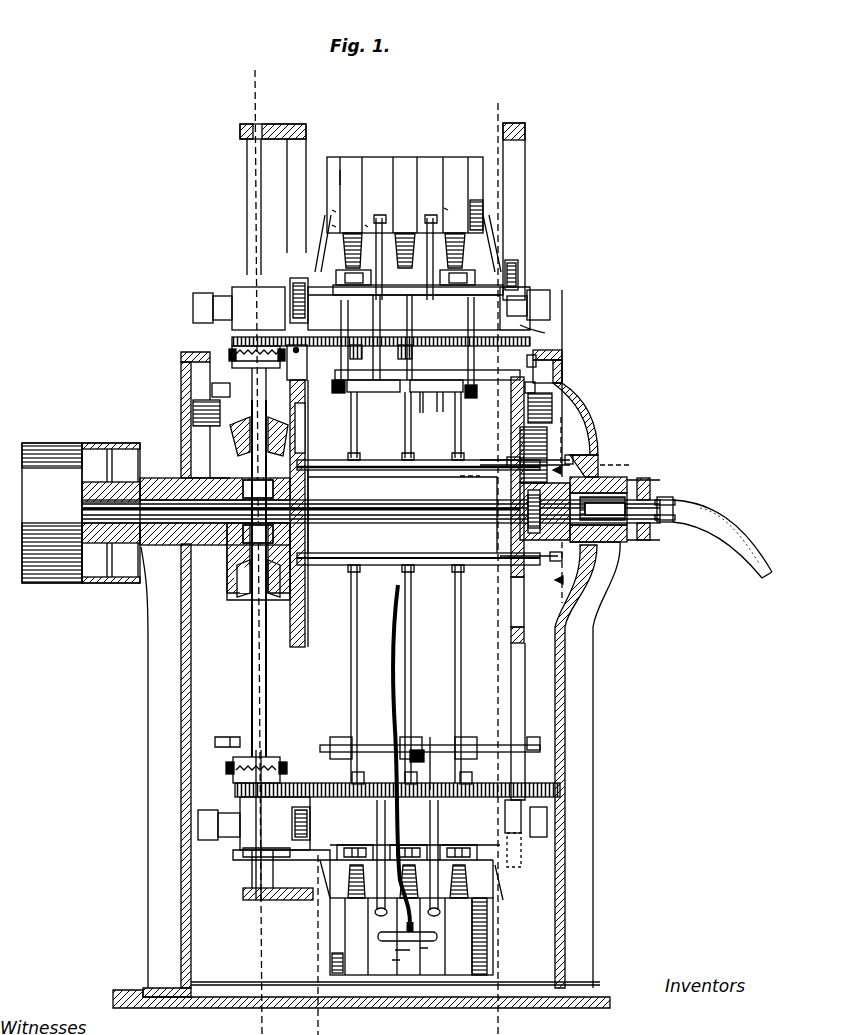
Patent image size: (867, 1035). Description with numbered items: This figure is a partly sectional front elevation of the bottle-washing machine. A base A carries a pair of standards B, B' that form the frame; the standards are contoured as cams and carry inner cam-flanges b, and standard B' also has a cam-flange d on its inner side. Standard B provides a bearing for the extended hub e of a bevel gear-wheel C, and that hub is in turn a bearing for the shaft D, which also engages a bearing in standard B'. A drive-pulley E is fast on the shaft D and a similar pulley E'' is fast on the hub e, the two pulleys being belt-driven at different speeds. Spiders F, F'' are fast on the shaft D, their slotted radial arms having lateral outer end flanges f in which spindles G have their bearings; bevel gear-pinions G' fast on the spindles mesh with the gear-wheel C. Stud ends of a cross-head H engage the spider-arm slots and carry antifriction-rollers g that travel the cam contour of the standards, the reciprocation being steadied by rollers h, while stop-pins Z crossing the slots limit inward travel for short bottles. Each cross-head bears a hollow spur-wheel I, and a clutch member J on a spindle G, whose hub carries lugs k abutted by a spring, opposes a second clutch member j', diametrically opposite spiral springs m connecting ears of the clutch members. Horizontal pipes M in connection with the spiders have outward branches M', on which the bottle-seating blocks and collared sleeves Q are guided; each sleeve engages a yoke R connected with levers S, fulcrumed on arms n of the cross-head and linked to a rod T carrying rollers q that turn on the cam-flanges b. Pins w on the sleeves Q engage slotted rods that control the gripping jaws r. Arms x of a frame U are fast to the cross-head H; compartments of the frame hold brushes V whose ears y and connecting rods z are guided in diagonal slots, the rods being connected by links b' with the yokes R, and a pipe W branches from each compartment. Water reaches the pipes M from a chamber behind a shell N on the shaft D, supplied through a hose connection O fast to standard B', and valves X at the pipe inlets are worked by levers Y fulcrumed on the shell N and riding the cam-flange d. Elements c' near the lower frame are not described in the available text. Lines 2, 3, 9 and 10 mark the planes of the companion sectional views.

The base A is at (225, 990).
The standard B is at (185, 670).
The standard B' is at (583, 639).
The lateral outer end flanges f is at (240, 130).
The frame U is at (400, 157).
The brushes V is at (436, 868).
The rods z is at (432, 218).
The arms x is at (318, 240).
The jaws r is at (360, 280).
The cross-head H is at (419, 308).
The links b' is at (432, 539).
The hollow spur-wheel I is at (218, 793).
The clutch member J is at (262, 335).
The antifriction-rollers g is at (200, 293).
The lugs k is at (308, 300).
The antifriction-rollers h is at (520, 275).
The clutch member j' is at (251, 517).
The spiral springs m is at (232, 353).
The antifriction-rollers q is at (225, 362).
The stop-pins Z is at (580, 333).
The fulcrum-arms n is at (341, 356).
The levers S is at (335, 378).
The collared sleeves Q is at (365, 393).
The yoke R is at (378, 745).
The rod T is at (432, 745).
The spider F is at (311, 513).
The spider F'' is at (501, 622).
The pipe branches M' is at (405, 587).
The pins w is at (395, 690).
The pipe W is at (410, 942).
The brackets c' is at (415, 860).
The horizontal pipes M is at (418, 512).
The shaft D is at (402, 511).
The drive-pulley E is at (52, 513).
The pulley E'' is at (111, 498).
The extended hub e is at (150, 482).
The spindles G is at (255, 634).
The bevel gear-pinions G' is at (251, 505).
The bevel gear-wheel C is at (225, 560).
The shell N is at (570, 543).
The levers Y is at (585, 440).
The cam-flange d is at (598, 450).
The valves X is at (530, 462).
The section line 9 9 is at (562, 512).
The section line 10 10 is at (474, 475).
The hose connection O is at (655, 497).
The ears y is at (345, 178).
The cam-flange b is at (372, 394).
The section line 2 2 is at (512, 107).
The section line 3 3 is at (274, 1024).